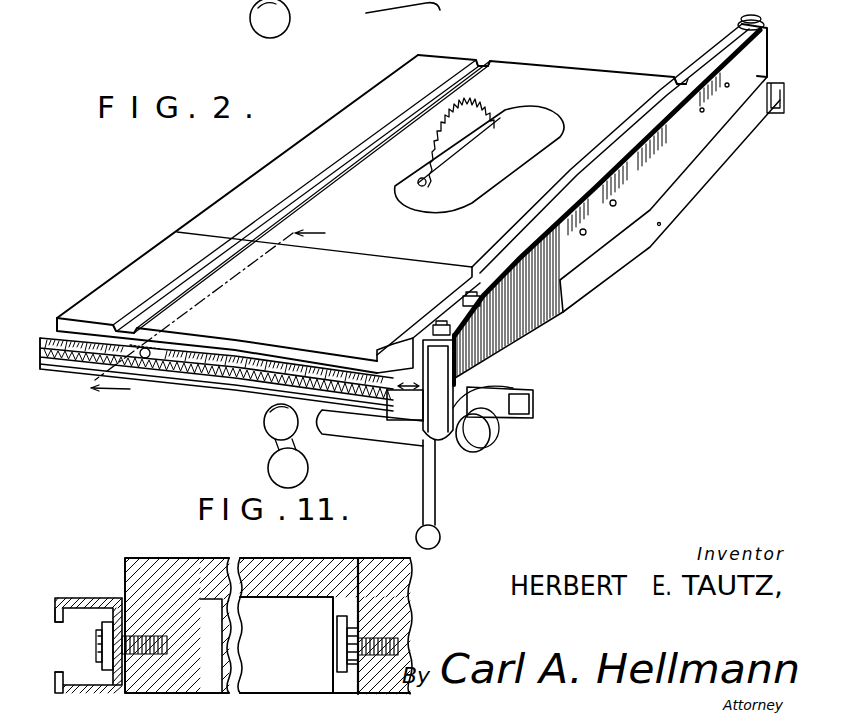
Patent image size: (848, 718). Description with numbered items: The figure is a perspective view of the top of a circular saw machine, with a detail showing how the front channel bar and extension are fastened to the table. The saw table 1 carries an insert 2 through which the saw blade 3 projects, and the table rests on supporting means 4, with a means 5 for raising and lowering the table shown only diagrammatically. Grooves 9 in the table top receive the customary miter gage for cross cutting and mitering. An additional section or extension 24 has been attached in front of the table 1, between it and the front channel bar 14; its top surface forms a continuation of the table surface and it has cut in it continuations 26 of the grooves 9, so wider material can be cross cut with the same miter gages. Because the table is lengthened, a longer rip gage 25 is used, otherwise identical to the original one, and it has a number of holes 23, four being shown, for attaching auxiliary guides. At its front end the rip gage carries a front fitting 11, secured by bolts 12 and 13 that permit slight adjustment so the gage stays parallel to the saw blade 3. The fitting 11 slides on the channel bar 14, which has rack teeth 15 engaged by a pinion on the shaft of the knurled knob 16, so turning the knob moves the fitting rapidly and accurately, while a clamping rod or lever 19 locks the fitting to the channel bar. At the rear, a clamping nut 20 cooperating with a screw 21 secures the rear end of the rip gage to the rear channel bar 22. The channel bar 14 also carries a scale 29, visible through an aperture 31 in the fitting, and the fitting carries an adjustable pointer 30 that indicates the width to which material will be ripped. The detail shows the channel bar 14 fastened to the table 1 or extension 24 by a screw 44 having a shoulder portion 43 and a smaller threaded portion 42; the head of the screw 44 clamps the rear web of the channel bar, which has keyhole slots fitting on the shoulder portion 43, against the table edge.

In FIG. 2, the saw table 1 is at (577, 75).
In FIG. 11, the saw table 1 is at (378, 575).
In FIG. 2, the insert 2 is at (547, 125).
In FIG. 2, the saw blade 3 is at (473, 118).
In FIG. 2, the supporting means 4 is at (368, 437).
In FIG. 2, the means for raising and lowering the table 5 is at (275, 430).
In FIG. 2, the grooves 9 is at (480, 64).
In FIG. 2, the front fitting 11 is at (540, 378).
In FIG. 2, the bolt 12 is at (433, 328).
In FIG. 2, the bolt 13 is at (465, 299).
In FIG. 2, the front channel bar 14 is at (535, 412).
In FIG. 11, the front channel bar 14 is at (93, 597).
In FIG. 2, the rack teeth 15 is at (107, 352).
In FIG. 11, the rack teeth 15 is at (55, 625).
In FIG. 2, the knurled knob 16 is at (487, 442).
In FIG. 2, the clamping rod or lever 19 is at (436, 508).
In FIG. 2, the clamping nut 20 is at (763, 20).
In FIG. 2, the screw 21 is at (745, 22).
In FIG. 2, the rear channel bar 22 is at (773, 90).
In FIG. 2, the holes 23 is at (586, 235).
In FIG. 2, the extension 24 is at (123, 280).
In FIG. 11, the extension 24 is at (166, 570).
In FIG. 2, the rip gage 25 is at (672, 155).
In FIG. 2, the continuations of the grooves 26 is at (203, 288).
In FIG. 2, the scale 29 is at (217, 358).
In FIG. 2, the pointer 30 is at (405, 402).
In FIG. 2, the aperture 31 is at (390, 348).
In FIG. 11, the threaded portion 42 is at (153, 643).
In FIG. 11, the shoulder portion 43 is at (104, 660).
In FIG. 2, the screw 44 is at (131, 329).
In FIG. 11, the screw 44 is at (342, 614).